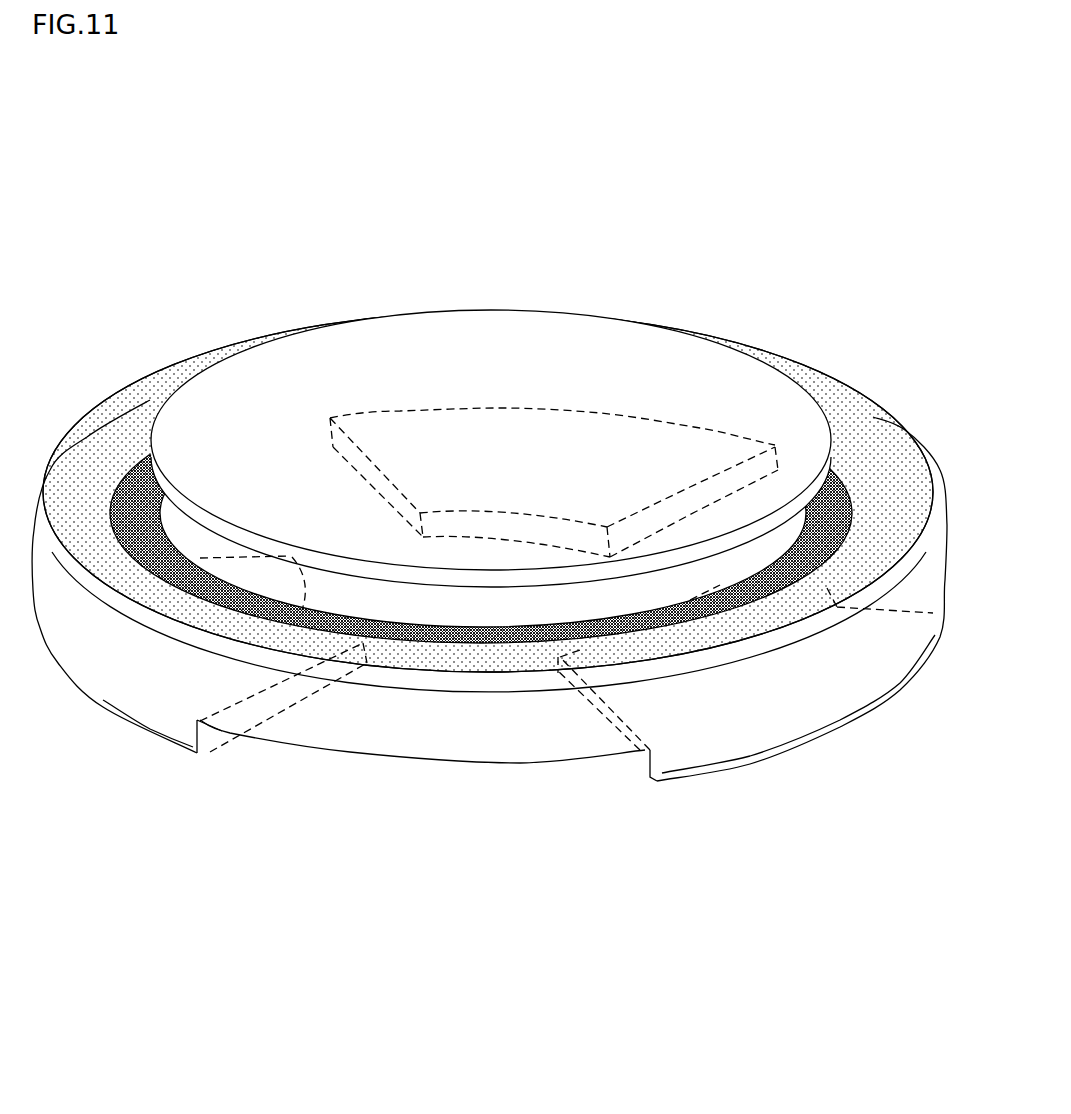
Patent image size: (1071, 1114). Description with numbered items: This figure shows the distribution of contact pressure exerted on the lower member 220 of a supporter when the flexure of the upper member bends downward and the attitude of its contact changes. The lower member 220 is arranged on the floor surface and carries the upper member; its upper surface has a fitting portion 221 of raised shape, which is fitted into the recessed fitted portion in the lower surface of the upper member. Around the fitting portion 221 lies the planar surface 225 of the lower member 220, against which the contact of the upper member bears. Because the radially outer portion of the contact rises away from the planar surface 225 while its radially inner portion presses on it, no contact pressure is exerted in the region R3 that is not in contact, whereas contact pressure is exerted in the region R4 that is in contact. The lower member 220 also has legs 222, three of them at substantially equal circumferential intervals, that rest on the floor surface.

The lower member 220 is at (553, 289).
The fitting portion 221 is at (748, 565).
The legs 222 is at (330, 418).
The planar surface 225 is at (863, 437).
The region R3 is at (85, 533).
The region R4 is at (126, 485).